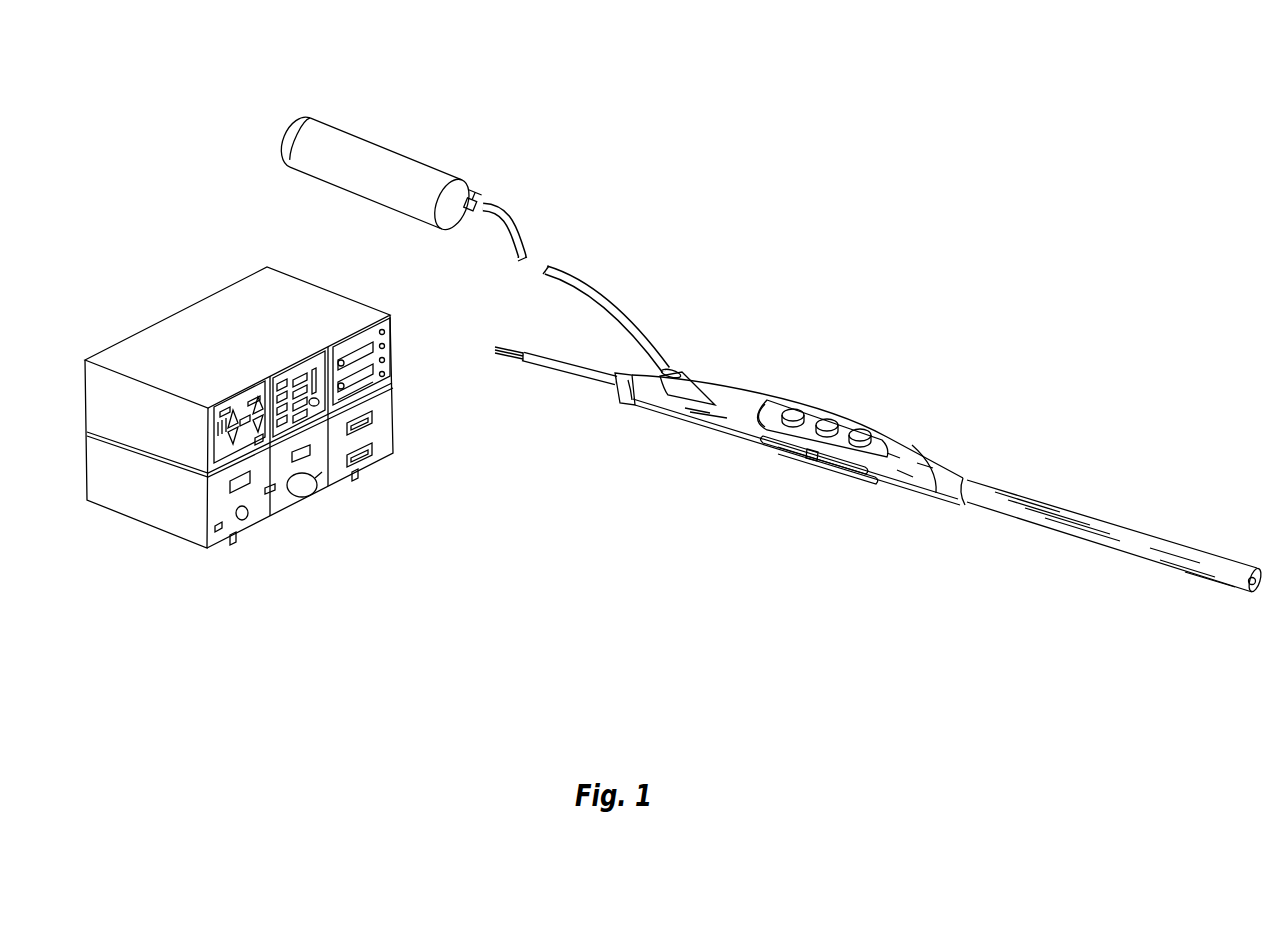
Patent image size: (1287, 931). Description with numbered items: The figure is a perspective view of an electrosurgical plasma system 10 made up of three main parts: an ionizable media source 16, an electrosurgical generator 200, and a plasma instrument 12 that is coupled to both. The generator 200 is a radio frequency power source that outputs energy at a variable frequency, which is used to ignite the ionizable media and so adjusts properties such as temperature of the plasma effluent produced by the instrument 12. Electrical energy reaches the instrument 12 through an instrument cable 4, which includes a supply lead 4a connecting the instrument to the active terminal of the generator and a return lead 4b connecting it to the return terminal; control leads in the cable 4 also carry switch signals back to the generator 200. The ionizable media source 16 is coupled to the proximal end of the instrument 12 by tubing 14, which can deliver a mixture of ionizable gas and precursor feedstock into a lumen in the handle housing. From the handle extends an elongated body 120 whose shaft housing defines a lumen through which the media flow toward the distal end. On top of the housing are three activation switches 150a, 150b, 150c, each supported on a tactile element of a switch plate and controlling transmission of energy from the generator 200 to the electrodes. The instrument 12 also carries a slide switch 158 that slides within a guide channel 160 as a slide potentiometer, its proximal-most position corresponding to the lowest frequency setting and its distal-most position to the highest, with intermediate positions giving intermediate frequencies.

The electrosurgical generator 200 is at (132, 240).
The ionizable media source 16 is at (390, 145).
The tubing 14 is at (614, 302).
The instrument cable 4 is at (567, 360).
The supply lead 4a is at (511, 345).
The electrode wire 4b is at (505, 362).
The electrosurgical plasma system 10 is at (960, 290).
The plasma instrument 12 is at (928, 452).
The elongated body 120 is at (1098, 527).
The activation switch 150a is at (793, 405).
The activation switch 150b is at (827, 420).
The activation switch 150c is at (861, 430).
The guide channel 160 is at (777, 453).
The slide switch 158 is at (811, 463).